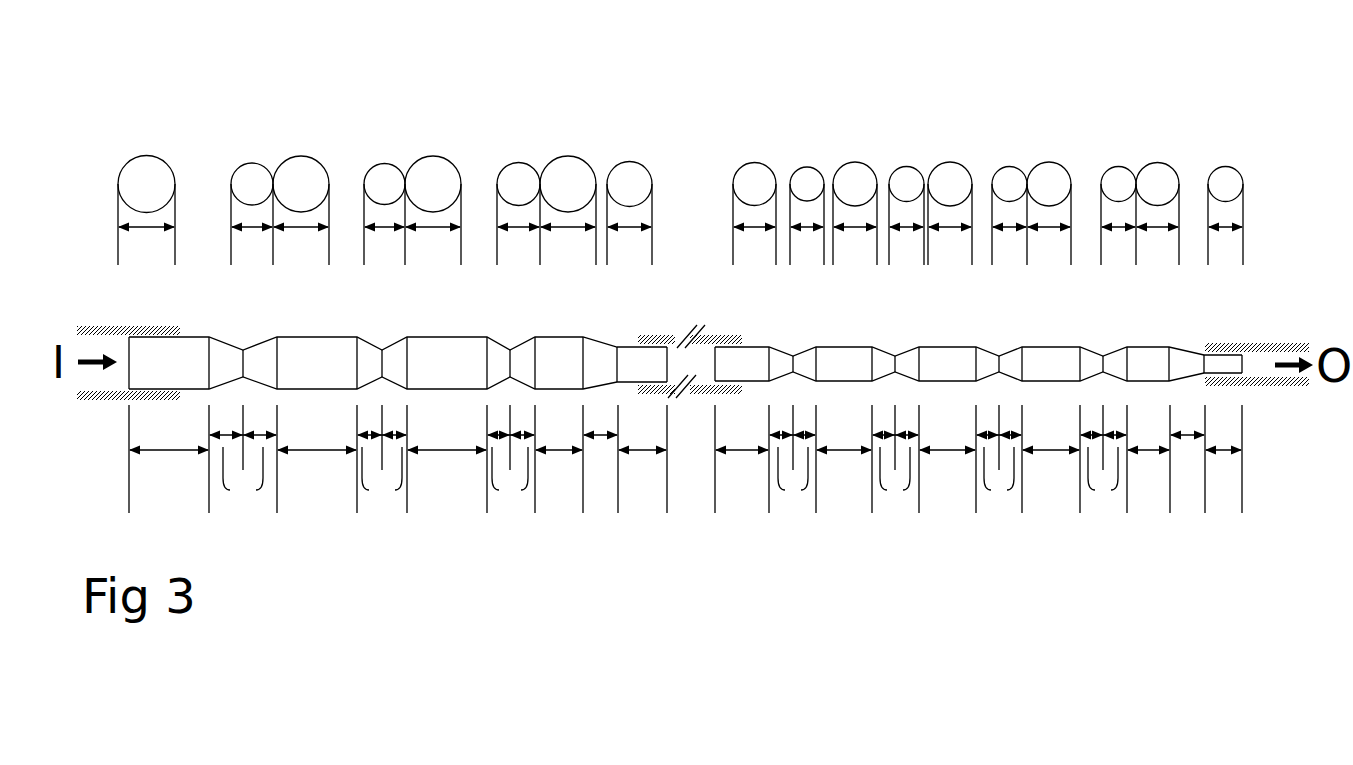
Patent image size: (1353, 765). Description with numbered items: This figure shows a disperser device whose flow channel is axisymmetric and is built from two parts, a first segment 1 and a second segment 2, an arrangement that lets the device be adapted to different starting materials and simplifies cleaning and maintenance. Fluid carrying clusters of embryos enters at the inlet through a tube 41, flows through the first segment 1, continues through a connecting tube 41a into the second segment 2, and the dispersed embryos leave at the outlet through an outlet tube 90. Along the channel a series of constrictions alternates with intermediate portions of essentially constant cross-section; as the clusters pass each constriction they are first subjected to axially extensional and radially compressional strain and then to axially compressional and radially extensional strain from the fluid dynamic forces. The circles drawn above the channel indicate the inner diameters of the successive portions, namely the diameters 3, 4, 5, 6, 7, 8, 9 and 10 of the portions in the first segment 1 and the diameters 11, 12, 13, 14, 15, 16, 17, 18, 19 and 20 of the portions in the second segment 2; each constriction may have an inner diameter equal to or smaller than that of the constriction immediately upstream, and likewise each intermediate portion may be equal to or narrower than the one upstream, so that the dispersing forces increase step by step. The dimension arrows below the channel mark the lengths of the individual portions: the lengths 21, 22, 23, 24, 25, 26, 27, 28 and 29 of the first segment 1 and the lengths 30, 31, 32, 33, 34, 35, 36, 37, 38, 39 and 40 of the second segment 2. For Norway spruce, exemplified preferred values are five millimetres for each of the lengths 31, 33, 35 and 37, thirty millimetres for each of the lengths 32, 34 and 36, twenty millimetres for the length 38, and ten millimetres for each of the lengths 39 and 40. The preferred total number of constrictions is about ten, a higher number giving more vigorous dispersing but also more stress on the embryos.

The first segment 1 is at (187, 335).
The second segment 2 is at (1182, 345).
The first lumen diameter 3 is at (130, 363).
The second lumen diameter 4 is at (243, 365).
The third lumen diameter 5 is at (277, 370).
The fourth lumen diameter 6 is at (383, 357).
The fifth lumen diameter 7 is at (407, 373).
The sixth lumen diameter 8 is at (510, 357).
The seventh lumen diameter 9 is at (535, 370).
The eighth lumen diameter 10 is at (617, 367).
The ninth lumen diameter 11 is at (769, 361).
The tenth lumen diameter 12 is at (793, 358).
The eleventh lumen diameter 13 is at (872, 362).
The twelfth lumen diameter 14 is at (895, 358).
The thirteenth lumen diameter 15 is at (976, 362).
The fourteenth lumen diameter 16 is at (999, 358).
The fifteenth lumen diameter 17 is at (1023, 372).
The sixteenth lumen diameter 18 is at (1103, 357).
The seventeenth lumen diameter 19 is at (1127, 365).
The eighteenth lumen diameter 20 is at (1208, 367).
The length of first section 21 is at (169, 459).
The length of first constriction 22 is at (243, 460).
The length of second section 23 is at (317, 459).
The length of second constriction 24 is at (382, 460).
The length of third section 25 is at (447, 459).
The length of third constriction 26 is at (511, 460).
The length of fourth section 27 is at (559, 459).
The length of first taper 28 is at (600, 460).
The length of fifth section 29 is at (642, 459).
The length of sixth section 30 is at (742, 459).
The length of flow channel part 31 is at (792, 460).
The length of flow channel part 32 is at (844, 459).
The length of flow channel part 33 is at (895, 460).
The length of flow channel part 34 is at (947, 459).
The length of flow channel part 35 is at (999, 460).
The length of flow channel part 36 is at (1051, 459).
The length of flow channel part 37 is at (1103, 460).
The length of flow channel part 38 is at (1148, 459).
The length of flow channel part 39 is at (1187, 460).
The length of flow channel part 40 is at (1223, 459).
The tube 41 is at (140, 326).
The connecting tube 41a is at (660, 336).
The outlet tube 90 is at (1233, 343).